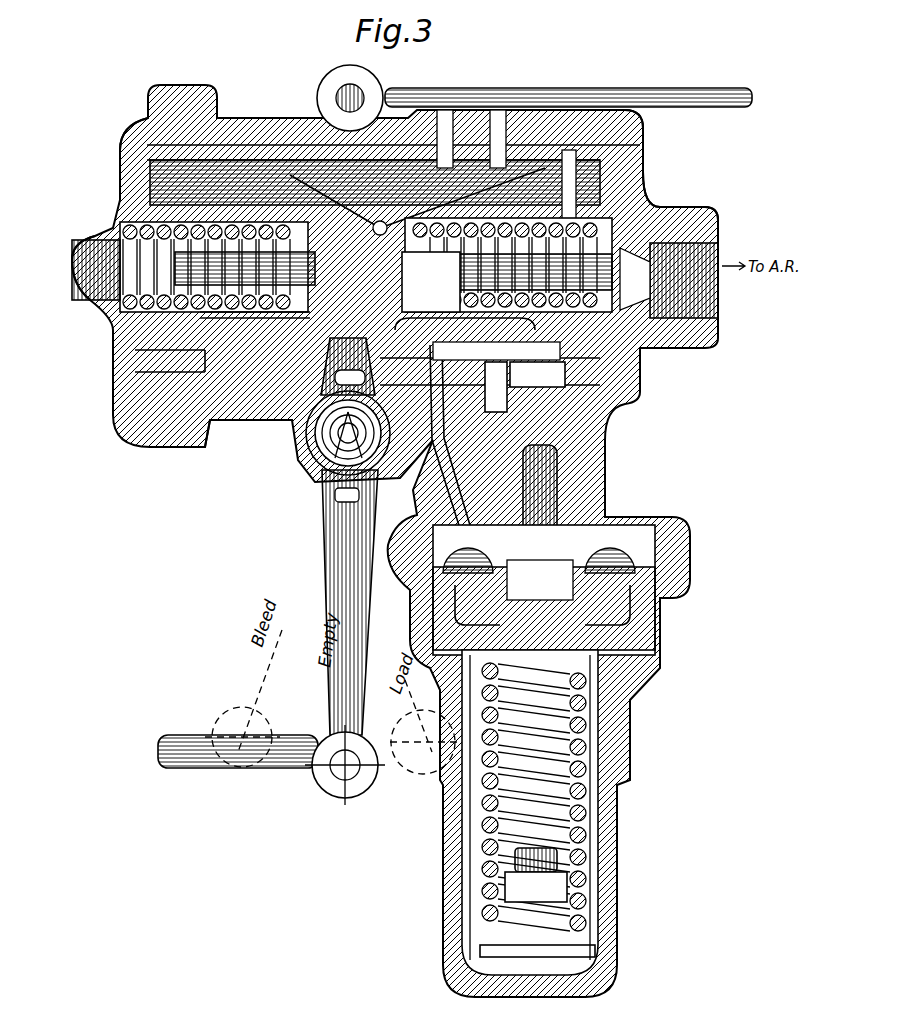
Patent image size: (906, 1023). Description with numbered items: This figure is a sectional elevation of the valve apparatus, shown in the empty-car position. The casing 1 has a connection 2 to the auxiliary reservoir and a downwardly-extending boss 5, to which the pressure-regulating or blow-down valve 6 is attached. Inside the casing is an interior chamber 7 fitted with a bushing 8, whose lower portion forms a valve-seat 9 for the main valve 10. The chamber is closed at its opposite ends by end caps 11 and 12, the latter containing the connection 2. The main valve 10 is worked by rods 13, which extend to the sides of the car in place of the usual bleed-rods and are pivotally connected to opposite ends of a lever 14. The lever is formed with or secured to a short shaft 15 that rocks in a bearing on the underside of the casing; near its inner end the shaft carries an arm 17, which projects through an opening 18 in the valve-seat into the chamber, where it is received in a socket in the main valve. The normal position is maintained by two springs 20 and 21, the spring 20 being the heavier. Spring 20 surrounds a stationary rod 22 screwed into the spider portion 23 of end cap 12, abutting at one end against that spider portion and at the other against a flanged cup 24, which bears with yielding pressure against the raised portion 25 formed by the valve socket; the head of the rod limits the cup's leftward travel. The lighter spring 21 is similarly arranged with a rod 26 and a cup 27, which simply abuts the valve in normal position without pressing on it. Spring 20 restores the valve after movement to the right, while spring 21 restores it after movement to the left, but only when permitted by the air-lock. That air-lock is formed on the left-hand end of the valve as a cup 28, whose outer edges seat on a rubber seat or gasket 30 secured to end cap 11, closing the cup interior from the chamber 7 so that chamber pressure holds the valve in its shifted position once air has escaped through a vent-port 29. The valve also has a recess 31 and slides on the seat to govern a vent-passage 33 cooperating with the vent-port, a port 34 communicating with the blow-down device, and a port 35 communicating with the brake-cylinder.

The casing 1 is at (240, 120).
The connection 2 is at (718, 315).
The downwardly-extending boss 5 is at (607, 466).
The pressure-regulating valve 6 is at (612, 811).
The interior chamber 7 is at (650, 204).
The bushing 8 is at (283, 150).
The valve-seat 9 is at (560, 398).
The main valve 10 is at (515, 350).
The end cap 11 is at (132, 143).
The end cap 12 is at (657, 183).
The rods 13 is at (700, 92).
The lever 14 is at (338, 86).
The short shaft 15 is at (328, 456).
The arm 17 is at (348, 365).
The opening 18 is at (292, 449).
The spring 20 is at (452, 236).
The spring 21 is at (100, 240).
The stationary rod 22 is at (526, 272).
The spider portion 23 is at (672, 298).
The flanged cup 24 is at (431, 282).
The raised portion 25 is at (417, 208).
The rod 26 is at (87, 292).
The cup 27 is at (214, 259).
The cup 28 is at (245, 269).
The vent-port 29 is at (255, 321).
The seat or gasket 30 is at (138, 352).
The recess 31 is at (432, 353).
The vent-passage 33 is at (233, 422).
The port 34 is at (479, 378).
The port 35 is at (520, 354).